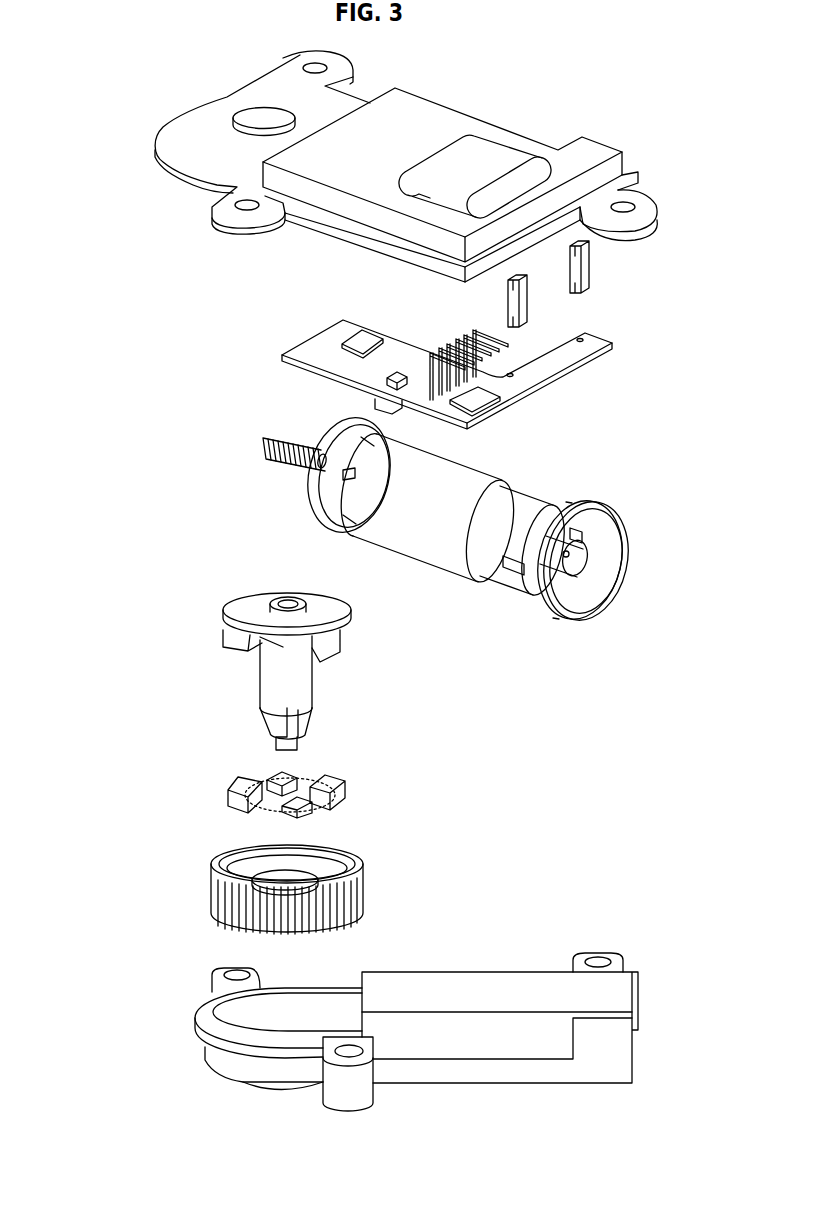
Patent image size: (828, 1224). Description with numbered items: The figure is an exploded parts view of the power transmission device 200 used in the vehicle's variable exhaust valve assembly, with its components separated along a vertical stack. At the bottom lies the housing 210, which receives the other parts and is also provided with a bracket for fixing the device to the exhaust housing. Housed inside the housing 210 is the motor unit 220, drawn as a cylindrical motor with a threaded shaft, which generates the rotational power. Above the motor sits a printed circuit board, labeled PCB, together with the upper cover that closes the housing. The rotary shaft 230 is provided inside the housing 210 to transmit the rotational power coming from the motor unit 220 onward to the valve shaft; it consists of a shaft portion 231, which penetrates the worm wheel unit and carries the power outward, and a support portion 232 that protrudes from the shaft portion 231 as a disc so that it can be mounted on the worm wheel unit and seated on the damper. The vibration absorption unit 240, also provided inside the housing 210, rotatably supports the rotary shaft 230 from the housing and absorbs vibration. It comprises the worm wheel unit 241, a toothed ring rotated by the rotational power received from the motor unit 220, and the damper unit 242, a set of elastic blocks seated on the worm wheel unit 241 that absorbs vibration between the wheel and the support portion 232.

The power transmission device 200 is at (513, 122).
The printed circuit board PCB is at (600, 342).
The motor unit 220 is at (483, 472).
The rotary shaft 230 is at (98, 605).
The shaft portion 231 is at (270, 708).
The support portion 232 is at (237, 608).
The vibration absorption unit 240 is at (457, 795).
The worm wheel unit 241 is at (347, 893).
The damper unit 242 is at (347, 795).
The housing 210 is at (547, 975).